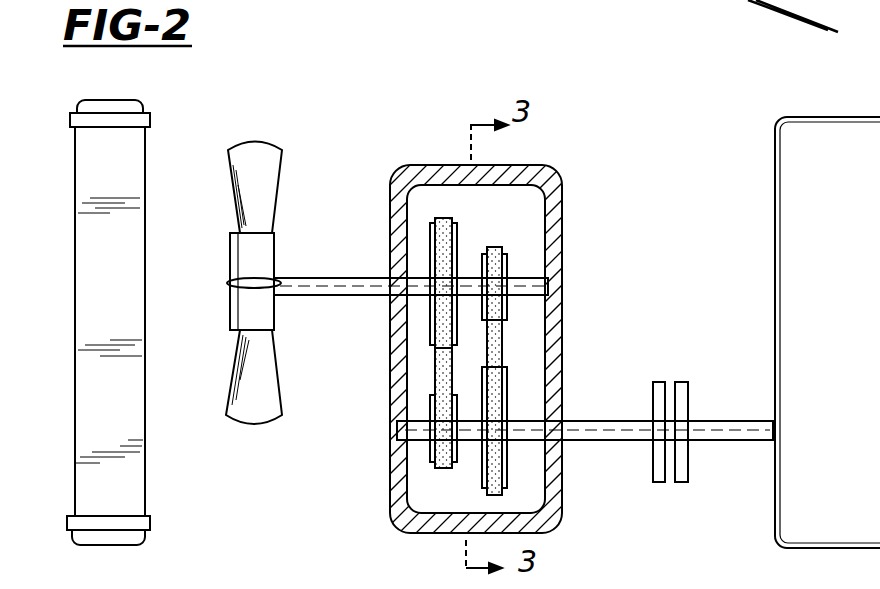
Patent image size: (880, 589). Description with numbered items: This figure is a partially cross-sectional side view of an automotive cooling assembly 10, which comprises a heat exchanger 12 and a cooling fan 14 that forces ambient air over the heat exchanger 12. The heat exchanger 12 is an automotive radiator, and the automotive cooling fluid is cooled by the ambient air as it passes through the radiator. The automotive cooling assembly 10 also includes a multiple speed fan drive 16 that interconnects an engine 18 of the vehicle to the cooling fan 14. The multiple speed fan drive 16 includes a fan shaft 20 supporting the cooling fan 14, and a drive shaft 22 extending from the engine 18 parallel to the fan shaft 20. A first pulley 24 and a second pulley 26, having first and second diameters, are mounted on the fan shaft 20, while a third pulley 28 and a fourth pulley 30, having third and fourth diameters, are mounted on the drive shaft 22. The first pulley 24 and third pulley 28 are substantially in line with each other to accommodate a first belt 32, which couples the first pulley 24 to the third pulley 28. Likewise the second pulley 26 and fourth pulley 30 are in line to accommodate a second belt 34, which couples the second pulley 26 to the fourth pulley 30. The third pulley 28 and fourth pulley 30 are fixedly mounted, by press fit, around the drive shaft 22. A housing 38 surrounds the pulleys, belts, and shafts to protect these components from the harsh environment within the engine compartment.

The automotive cooling assembly 10 is at (737, 129).
The heat exchanger 12 is at (138, 146).
The cooling fan 14 is at (257, 148).
The multiple speed fan drive 16 is at (373, 430).
The engine 18 is at (842, 220).
The fan shaft 20 is at (328, 277).
The drive shaft 22 is at (622, 421).
The first pulley 24 is at (461, 232).
The second pulley 26 is at (507, 266).
The third pulley 28 is at (460, 447).
The fourth pulley 30 is at (507, 473).
The first belt 32 is at (410, 352).
The second belt 34 is at (497, 333).
The housing 38 is at (557, 200).